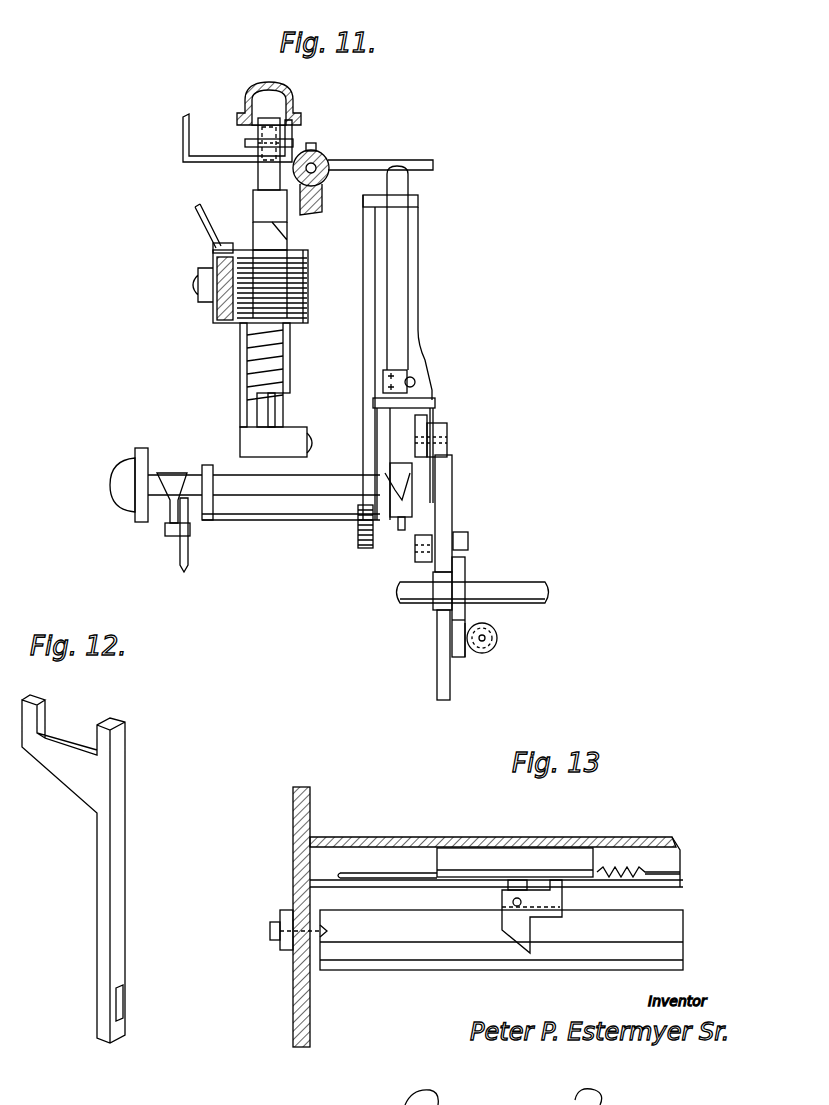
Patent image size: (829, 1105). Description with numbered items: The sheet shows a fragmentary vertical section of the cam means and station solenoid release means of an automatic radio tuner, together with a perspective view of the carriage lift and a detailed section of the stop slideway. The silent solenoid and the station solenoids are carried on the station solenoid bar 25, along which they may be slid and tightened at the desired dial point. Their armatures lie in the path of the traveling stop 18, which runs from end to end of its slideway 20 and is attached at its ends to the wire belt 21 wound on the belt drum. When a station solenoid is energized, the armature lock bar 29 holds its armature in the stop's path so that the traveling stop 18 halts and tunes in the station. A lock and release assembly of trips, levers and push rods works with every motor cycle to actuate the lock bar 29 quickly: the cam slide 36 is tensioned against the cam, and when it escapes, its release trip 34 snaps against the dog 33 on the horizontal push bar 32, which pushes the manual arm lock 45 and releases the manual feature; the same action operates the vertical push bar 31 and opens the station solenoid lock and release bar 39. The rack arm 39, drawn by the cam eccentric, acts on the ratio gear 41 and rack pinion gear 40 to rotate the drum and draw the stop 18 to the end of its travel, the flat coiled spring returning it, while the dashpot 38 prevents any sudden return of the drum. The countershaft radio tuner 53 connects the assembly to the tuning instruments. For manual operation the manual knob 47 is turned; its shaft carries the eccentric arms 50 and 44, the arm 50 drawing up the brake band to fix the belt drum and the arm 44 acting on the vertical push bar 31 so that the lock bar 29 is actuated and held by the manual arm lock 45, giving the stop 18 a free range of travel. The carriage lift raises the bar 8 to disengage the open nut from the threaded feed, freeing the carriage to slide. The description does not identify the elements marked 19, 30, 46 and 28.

In FIG. 11, the slideway 20 is at (293, 90).
In FIG. 13, the slideway 20 is at (517, 837).
In FIG. 11, the bracket 19 is at (187, 150).
In FIG. 11, the traveling stop 18 is at (260, 173).
In FIG. 13, the traveling stop 18 is at (523, 930).
In FIG. 11, the armature lock bar 29 is at (310, 217).
In FIG. 13, the armature lock bar 29 is at (433, 957).
In FIG. 11, the arm 30 is at (393, 160).
In FIG. 11, the vertical push bar 31 is at (398, 263).
In FIG. 11, the manual arm lock 45 is at (407, 372).
In FIG. 11, the horizontal push bar 32 is at (420, 425).
In FIG. 11, the dog 33 is at (447, 432).
In FIG. 11, the release trip 34 is at (442, 480).
In FIG. 11, the eccentric arm 44 is at (402, 528).
In FIG. 11, the ratio gear 41 is at (357, 543).
In FIG. 11, the bar 46 is at (277, 487).
In FIG. 11, the manual knob 47 is at (112, 478).
In FIG. 11, the eccentric arm 50 is at (168, 515).
In FIG. 11, the station solenoid bar 25 is at (213, 307).
In FIG. 11, the lever rod 28 is at (200, 220).
In FIG. 11, the countershaft radio tuner 53 is at (533, 583).
In FIG. 11, the cam slide 36 is at (450, 700).
In FIG. 11, the rack pinion gear 40 is at (465, 568).
In FIG. 11, the dashpot 38 is at (497, 638).
In FIG. 11, the rack arm 39 is at (463, 660).
In FIG. 12, the bar 8 is at (103, 907).
In FIG. 13, the wire belt 21 is at (372, 877).